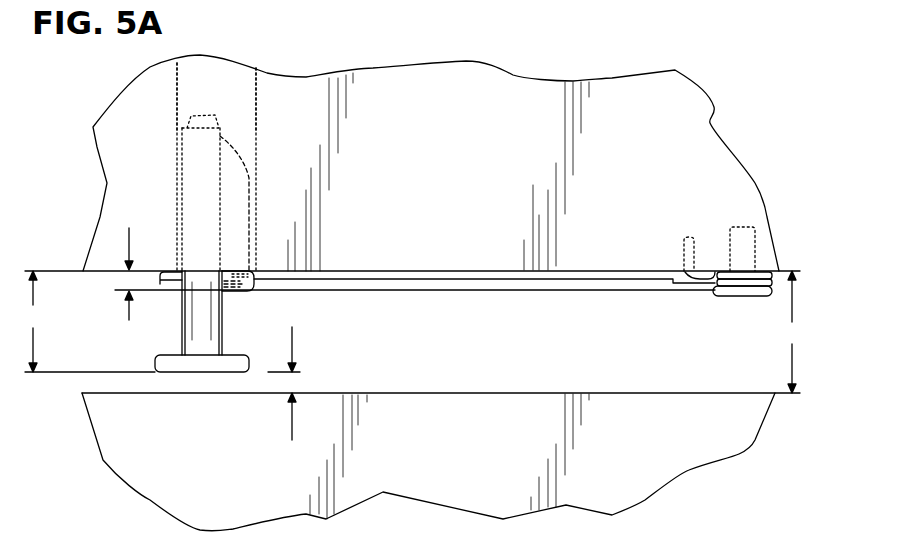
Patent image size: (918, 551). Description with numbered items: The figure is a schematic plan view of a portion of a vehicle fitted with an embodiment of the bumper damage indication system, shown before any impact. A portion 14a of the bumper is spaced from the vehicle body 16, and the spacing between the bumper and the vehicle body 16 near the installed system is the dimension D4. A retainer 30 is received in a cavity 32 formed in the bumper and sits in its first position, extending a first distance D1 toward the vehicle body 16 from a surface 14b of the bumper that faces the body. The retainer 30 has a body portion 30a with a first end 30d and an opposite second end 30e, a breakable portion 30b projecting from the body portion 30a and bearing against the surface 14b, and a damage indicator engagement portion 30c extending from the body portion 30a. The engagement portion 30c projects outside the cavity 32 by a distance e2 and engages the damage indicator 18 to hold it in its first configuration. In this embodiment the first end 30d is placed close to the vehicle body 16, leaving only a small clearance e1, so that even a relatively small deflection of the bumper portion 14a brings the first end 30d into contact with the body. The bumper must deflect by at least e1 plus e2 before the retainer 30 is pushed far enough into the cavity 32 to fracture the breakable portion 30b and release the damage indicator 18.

The portion of the bumper 14a is at (145, 150).
The surface of the bumper 14b is at (100, 271).
The vehicle body 16 is at (147, 393).
The damage indicator 18 is at (419, 290).
The retainer 30 is at (223, 307).
The body portion 30a is at (196, 153).
The breakable portion 30b is at (160, 283).
The damage indicator engagement portion 30c is at (246, 217).
The first end 30d is at (193, 364).
The second end 30e is at (200, 116).
The cavity 32 is at (200, 84).
The first distance D1 is at (34, 321).
The spacing between bumper and vehicle body D4 is at (790, 332).
The clearance e1 is at (293, 357).
The distance engagement portion extends outside cavity e2 is at (130, 242).